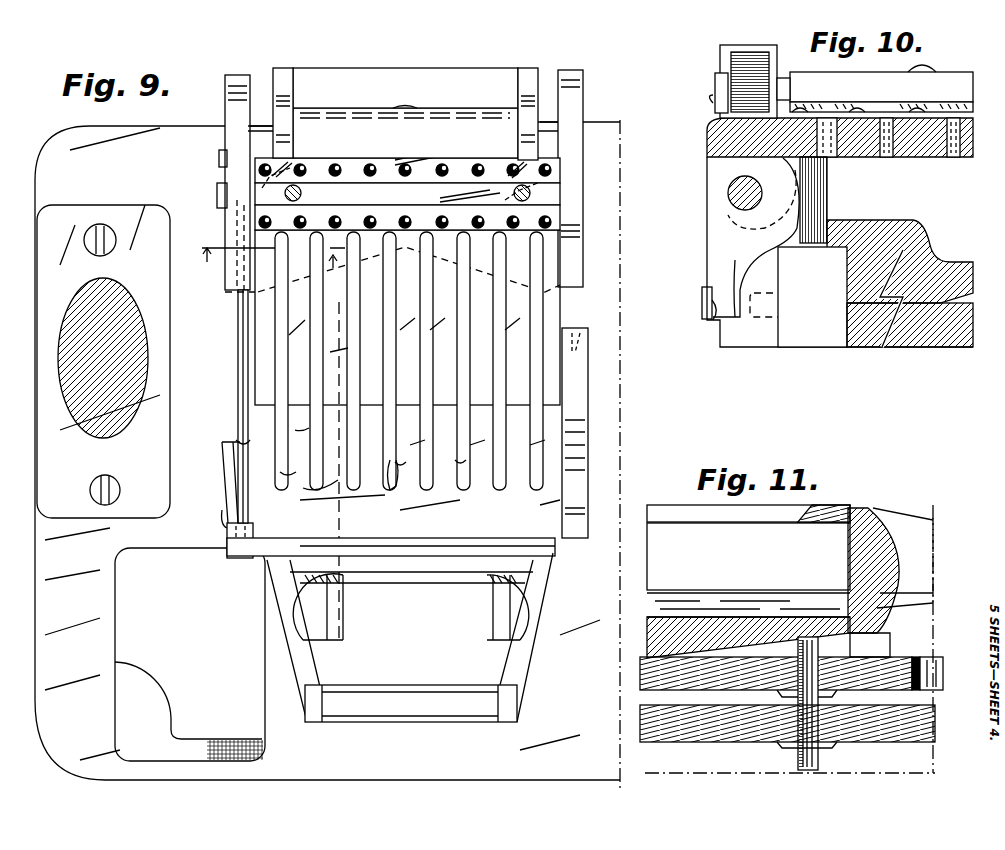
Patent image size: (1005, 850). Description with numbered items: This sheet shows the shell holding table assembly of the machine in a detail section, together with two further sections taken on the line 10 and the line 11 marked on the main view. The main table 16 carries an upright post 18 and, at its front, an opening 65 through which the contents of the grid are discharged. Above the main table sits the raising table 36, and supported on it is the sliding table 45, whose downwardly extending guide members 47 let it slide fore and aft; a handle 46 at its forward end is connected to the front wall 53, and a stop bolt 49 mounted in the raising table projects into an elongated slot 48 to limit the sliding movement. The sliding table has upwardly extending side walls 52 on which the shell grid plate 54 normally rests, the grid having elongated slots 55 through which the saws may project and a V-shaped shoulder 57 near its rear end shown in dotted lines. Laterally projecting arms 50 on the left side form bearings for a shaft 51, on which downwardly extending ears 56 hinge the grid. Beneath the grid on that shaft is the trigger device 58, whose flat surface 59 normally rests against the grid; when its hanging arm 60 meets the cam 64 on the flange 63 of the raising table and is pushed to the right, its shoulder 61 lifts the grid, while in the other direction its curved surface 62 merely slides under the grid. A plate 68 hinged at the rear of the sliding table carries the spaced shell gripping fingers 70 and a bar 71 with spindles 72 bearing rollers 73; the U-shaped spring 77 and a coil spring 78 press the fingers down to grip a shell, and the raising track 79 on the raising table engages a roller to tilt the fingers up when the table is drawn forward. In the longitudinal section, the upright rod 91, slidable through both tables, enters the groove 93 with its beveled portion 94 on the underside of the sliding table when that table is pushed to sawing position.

In FIG. 9, the section line 10— 10 is at (260, 251).
In FIG. 9, the section line 11— 11 is at (347, 471).
In FIG. 9, the table 16 is at (327, 455).
In FIG. 11, the table 16 is at (910, 728).
In FIG. 9, the upright post 18 is at (90, 420).
In FIG. 10, the raising table 36 is at (918, 340).
In FIG. 11, the raising table 36 is at (893, 670).
In FIG. 9, the sliding table 45 is at (570, 568).
In FIG. 10, the sliding table 45 is at (933, 240).
In FIG. 11, the sliding table 45 is at (695, 615).
In FIG. 9, the handle 46 is at (412, 693).
In FIG. 11, the handle 46 is at (903, 558).
In FIG. 10, the guide members 47 is at (880, 297).
In FIG. 9, the elongated slot 48 is at (408, 108).
In FIG. 9, the stop bolt 49 is at (392, 490).
In FIG. 9, the laterally projecting arms 50 is at (225, 222).
In FIG. 9, the shaft 51 is at (237, 325).
In FIG. 10, the shaft 51 is at (740, 198).
In FIG. 9, the upwardly extending walls 52 is at (283, 78).
In FIG. 9, the front wall 53 is at (418, 542).
In FIG. 11, the front wall 53 is at (862, 553).
In FIG. 9, the shell grid plate 54 is at (407, 374).
In FIG. 10, the shell grid plate 54 is at (962, 158).
In FIG. 11, the shell grid plate 54 is at (830, 508).
In FIG. 9, the elongated slots 55 is at (373, 488).
In FIG. 10, the elongated slots 55 is at (888, 158).
In FIG. 9, the ears 56 is at (212, 512).
In FIG. 10, the ears 56 is at (752, 237).
In FIG. 9, the V-shaped shoulder 57 is at (545, 290).
In FIG. 9, the trigger device 58 is at (292, 213).
In FIG. 10, the trigger device 58 is at (737, 192).
In FIG. 10, the flat surface 59 is at (712, 128).
In FIG. 10, the arm 60 is at (718, 312).
In FIG. 10, the shoulder 61 is at (827, 163).
In FIG. 10, the curved surface 62 is at (707, 163).
In FIG. 9, the flange 63 is at (248, 440).
In FIG. 9, the cam 64 is at (225, 464).
In FIG. 9, the opening 65 is at (255, 695).
In FIG. 9, the plate 68 is at (405, 133).
In FIG. 9, the shell gripping fingers 70 is at (417, 371).
In FIG. 9, the bar 71 is at (407, 189).
In FIG. 10, the bar 71 is at (881, 88).
In FIG. 9, the spindles 72 is at (560, 190).
In FIG. 10, the spindles 72 is at (784, 80).
In FIG. 10, the rollers 73 is at (750, 82).
In FIG. 9, the U-shaped spring 77 is at (236, 270).
In FIG. 10, the U-shaped spring 77 is at (720, 49).
In FIG. 9, the coil spring 78 is at (290, 168).
In FIG. 9, the raising track 79 is at (580, 465).
In FIG. 11, the upright rod 91 is at (806, 753).
In FIG. 11, the groove 93 is at (849, 648).
In FIG. 11, the beveled portion 94 is at (740, 638).